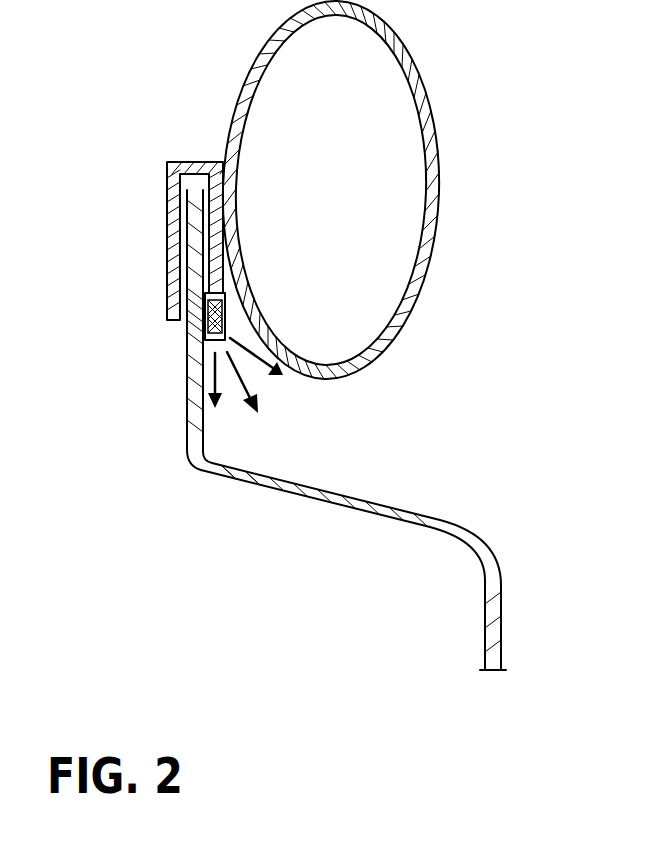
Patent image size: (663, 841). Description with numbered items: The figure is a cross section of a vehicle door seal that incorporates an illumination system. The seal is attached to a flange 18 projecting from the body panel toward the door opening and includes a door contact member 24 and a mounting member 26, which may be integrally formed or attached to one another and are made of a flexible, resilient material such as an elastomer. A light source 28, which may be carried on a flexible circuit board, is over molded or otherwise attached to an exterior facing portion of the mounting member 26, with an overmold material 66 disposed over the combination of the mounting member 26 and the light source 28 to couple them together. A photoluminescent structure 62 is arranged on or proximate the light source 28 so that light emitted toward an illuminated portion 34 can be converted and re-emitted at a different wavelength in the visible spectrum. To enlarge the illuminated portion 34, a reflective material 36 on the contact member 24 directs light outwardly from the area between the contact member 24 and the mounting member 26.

The flange 18 is at (188, 213).
The door contact member 24 is at (440, 148).
The mounting member 26 is at (195, 161).
The light source 28 is at (203, 331).
The illuminated portion 34 is at (285, 458).
The reflective material 36 is at (283, 353).
The photoluminescent structure 62 is at (207, 297).
The overmold material 66 is at (208, 340).